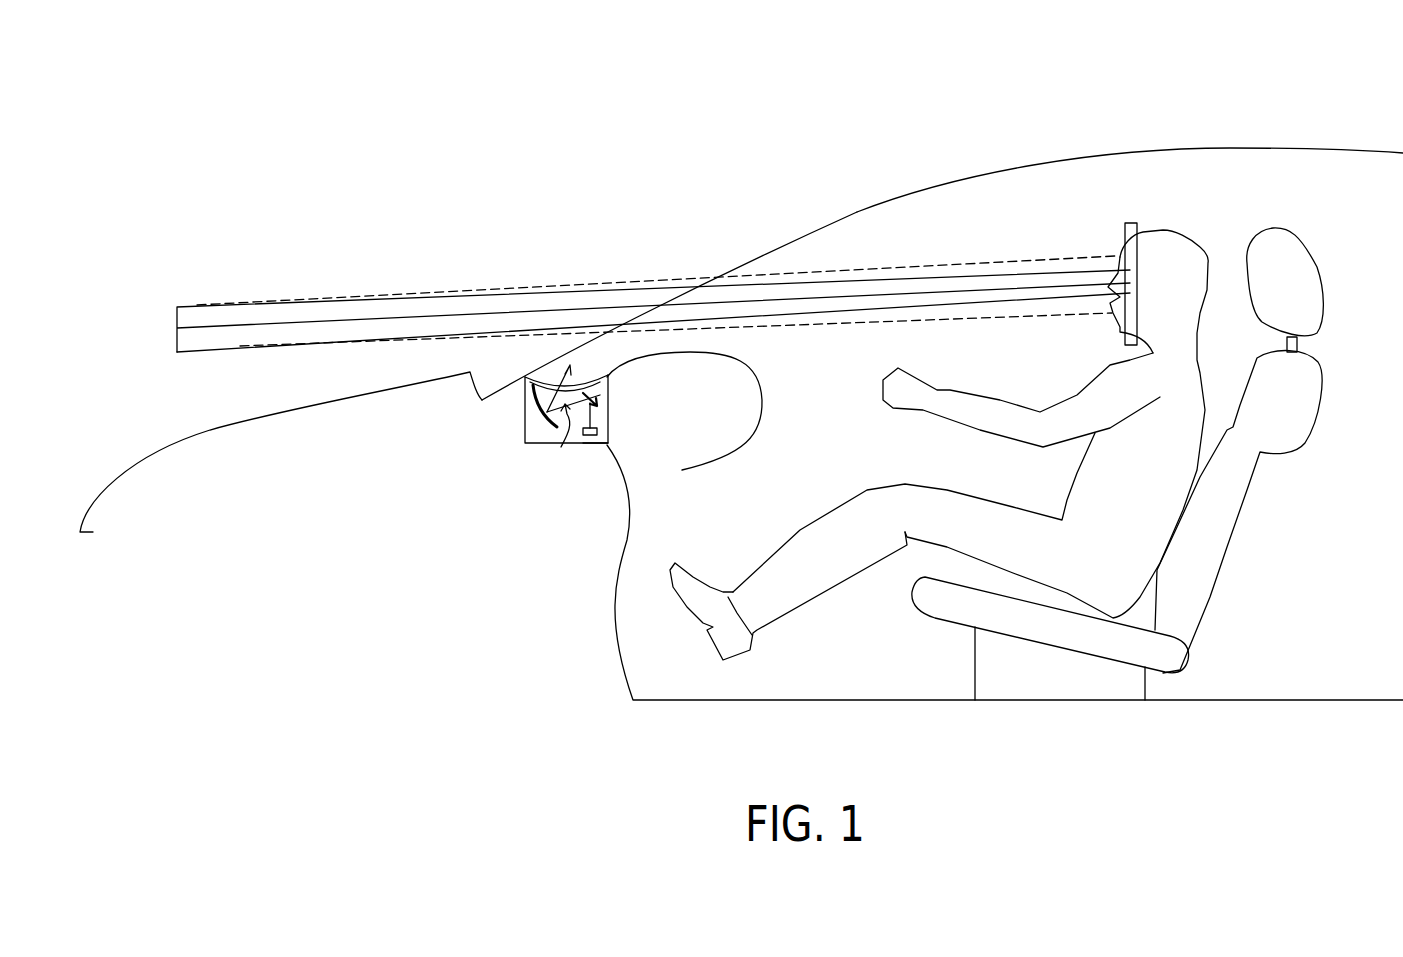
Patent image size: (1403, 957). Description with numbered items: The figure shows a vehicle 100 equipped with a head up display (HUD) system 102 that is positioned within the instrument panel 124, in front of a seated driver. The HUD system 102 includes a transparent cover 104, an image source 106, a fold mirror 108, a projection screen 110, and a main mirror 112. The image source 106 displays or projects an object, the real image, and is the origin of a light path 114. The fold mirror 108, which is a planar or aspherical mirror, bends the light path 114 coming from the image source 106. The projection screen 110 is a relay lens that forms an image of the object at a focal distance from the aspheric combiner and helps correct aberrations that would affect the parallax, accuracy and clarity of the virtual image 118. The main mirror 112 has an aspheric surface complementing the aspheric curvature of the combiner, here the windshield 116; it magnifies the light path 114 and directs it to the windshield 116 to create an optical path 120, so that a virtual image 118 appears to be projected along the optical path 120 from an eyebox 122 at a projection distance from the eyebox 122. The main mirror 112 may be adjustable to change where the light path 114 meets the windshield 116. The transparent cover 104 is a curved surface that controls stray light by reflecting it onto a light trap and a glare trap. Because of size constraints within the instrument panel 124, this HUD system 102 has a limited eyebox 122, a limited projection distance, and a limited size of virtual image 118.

The vehicle 100 is at (1233, 148).
The head up display (HUD) system 102 is at (525, 431).
The transparent cover 104 is at (608, 387).
The image source 106 is at (590, 443).
The fold mirror 108 is at (600, 397).
The projection screen 110 is at (560, 447).
The main mirror 112 is at (525, 402).
The light path 114 is at (608, 415).
The windshield 116 is at (855, 212).
The virtual image 118 is at (204, 313).
The optical path 120 is at (835, 319).
The eyebox 122 is at (1140, 276).
The instrument panel 124 is at (588, 365).